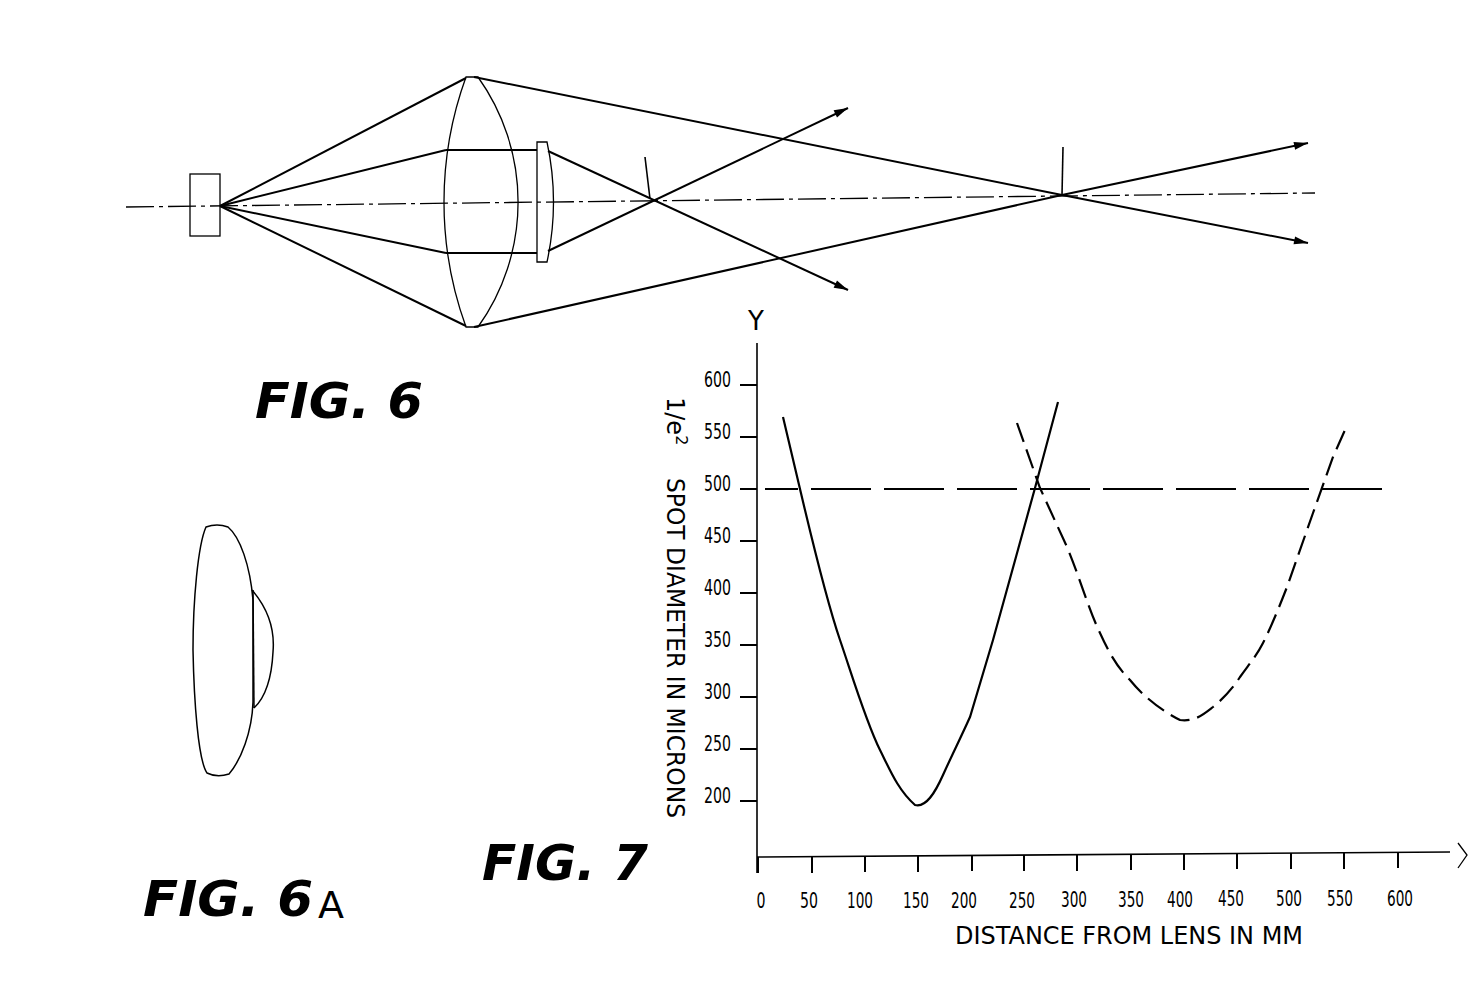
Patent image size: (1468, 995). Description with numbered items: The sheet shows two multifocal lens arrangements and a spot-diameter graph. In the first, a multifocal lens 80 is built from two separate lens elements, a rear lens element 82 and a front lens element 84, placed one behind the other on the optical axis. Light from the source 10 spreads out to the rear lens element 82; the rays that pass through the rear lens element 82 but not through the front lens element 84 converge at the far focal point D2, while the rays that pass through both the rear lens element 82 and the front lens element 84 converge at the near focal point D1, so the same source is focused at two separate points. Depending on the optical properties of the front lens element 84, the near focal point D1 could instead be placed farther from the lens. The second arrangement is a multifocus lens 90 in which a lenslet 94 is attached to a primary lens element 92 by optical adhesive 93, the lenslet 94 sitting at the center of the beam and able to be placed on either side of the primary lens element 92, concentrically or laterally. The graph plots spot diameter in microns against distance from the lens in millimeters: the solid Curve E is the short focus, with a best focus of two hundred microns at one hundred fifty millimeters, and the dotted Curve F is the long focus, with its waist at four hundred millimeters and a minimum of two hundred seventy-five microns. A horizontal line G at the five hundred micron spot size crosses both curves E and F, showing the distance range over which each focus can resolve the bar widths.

In FIG. 6, the source 10 is at (202, 237).
In FIG. 6, the multifocal lens 80 is at (637, 101).
In FIG. 6, the rear lens element 82 is at (497, 125).
In FIG. 6, the front lens element 84 is at (549, 149).
In FIG. 6, the near focal point D1 is at (664, 167).
In FIG. 6, the far focal point D2 is at (1040, 159).
In FIG. 6A, the multifocus lens 90 is at (284, 679).
In FIG. 6A, the primary lens element 92 is at (228, 715).
In FIG. 6A, the optical adhesive 93 is at (252, 590).
In FIG. 6A, the lenslet 94 is at (263, 650).
In FIG. 7, the Curve E is at (942, 775).
In FIG. 7, the Curve F is at (1228, 690).
In FIG. 7, the line G is at (1102, 489).